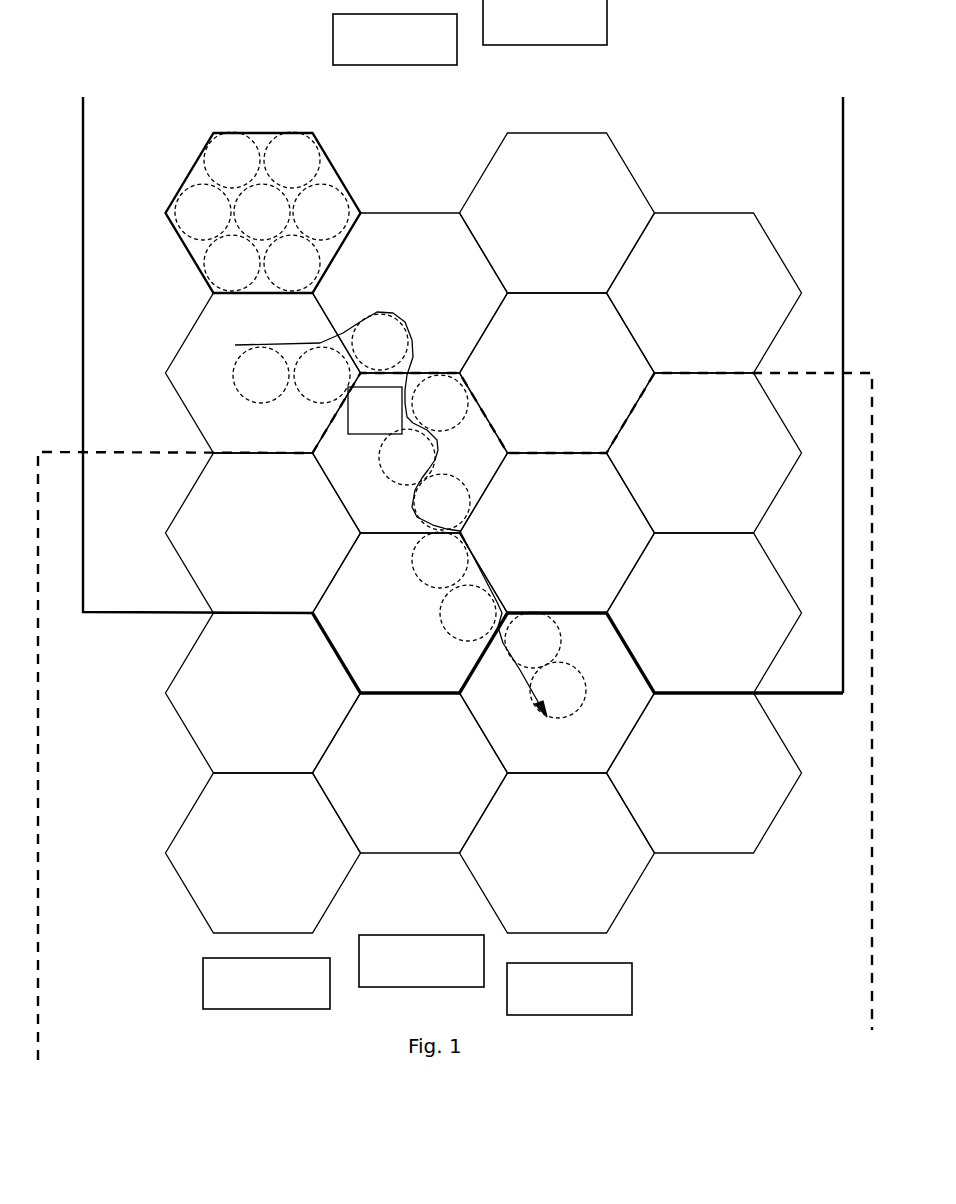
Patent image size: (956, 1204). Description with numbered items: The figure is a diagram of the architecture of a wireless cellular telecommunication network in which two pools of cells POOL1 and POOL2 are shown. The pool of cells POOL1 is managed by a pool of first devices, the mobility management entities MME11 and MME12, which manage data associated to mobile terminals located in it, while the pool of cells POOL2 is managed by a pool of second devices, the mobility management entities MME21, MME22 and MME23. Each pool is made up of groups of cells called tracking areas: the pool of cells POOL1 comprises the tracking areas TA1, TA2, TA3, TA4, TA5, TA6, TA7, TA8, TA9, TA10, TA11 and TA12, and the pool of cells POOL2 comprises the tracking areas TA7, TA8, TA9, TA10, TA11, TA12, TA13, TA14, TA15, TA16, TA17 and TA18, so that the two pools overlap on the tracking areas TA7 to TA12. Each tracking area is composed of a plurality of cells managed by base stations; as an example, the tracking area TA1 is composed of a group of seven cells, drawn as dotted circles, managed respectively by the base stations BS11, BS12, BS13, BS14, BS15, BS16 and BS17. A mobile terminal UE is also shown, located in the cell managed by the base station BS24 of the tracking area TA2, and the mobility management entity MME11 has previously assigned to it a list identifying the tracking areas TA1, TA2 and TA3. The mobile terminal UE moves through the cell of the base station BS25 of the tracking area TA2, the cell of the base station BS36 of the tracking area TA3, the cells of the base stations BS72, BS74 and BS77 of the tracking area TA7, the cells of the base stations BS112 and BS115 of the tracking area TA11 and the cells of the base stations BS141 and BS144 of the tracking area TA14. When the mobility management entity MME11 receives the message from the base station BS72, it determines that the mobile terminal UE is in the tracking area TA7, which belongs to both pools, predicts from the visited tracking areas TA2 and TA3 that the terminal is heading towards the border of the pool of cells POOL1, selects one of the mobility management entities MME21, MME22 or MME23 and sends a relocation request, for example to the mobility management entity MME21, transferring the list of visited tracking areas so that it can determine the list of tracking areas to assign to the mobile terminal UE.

The tracking area TA1 is at (267, 133).
The tracking area TA2 is at (263, 373).
The tracking area TA3 is at (410, 293).
The tracking area TA4 is at (557, 213).
The tracking area TA5 is at (557, 373).
The tracking area TA6 is at (704, 293).
The tracking area TA7 is at (410, 453).
The tracking area TA8 is at (704, 453).
The tracking area TA9 is at (263, 533).
The tracking area TA10 is at (557, 533).
The tracking area TA11 is at (410, 613).
The tracking area TA12 is at (704, 613).
The tracking area TA13 is at (263, 693).
The tracking area TA14 is at (557, 693).
The tracking area TA15 is at (410, 773).
The tracking area TA16 is at (704, 773).
The tracking area TA17 is at (263, 853).
The tracking area TA18 is at (557, 853).
The base station BS11 is at (232, 160).
The base station BS12 is at (292, 160).
The base station BS13 is at (203, 212).
The base station BS14 is at (262, 212).
The base station BS15 is at (321, 212).
The base station BS16 is at (232, 263).
The base station BS17 is at (292, 263).
The base station BS24 is at (261, 375).
The base station BS25 is at (322, 375).
The base station BS36 is at (380, 342).
The base station BS72 is at (440, 403).
The base station BS74 is at (407, 457).
The base station BS77 is at (442, 502).
The base station BS112 is at (441, 560).
The base station BS115 is at (469, 613).
The base station BS141 is at (534, 640).
The base station BS144 is at (559, 690).
The mobile terminal UE is at (391, 514).
The pool of cells POOL1 is at (843, 180).
The pool of cells POOL2 is at (872, 975).
The mobility management entity MME11 is at (395, 39).
The mobility management entity MME12 is at (545, 22).
The mobility management entity MME21 is at (266, 983).
The mobility management entity MME22 is at (421, 961).
The mobility management entity MME23 is at (569, 989).